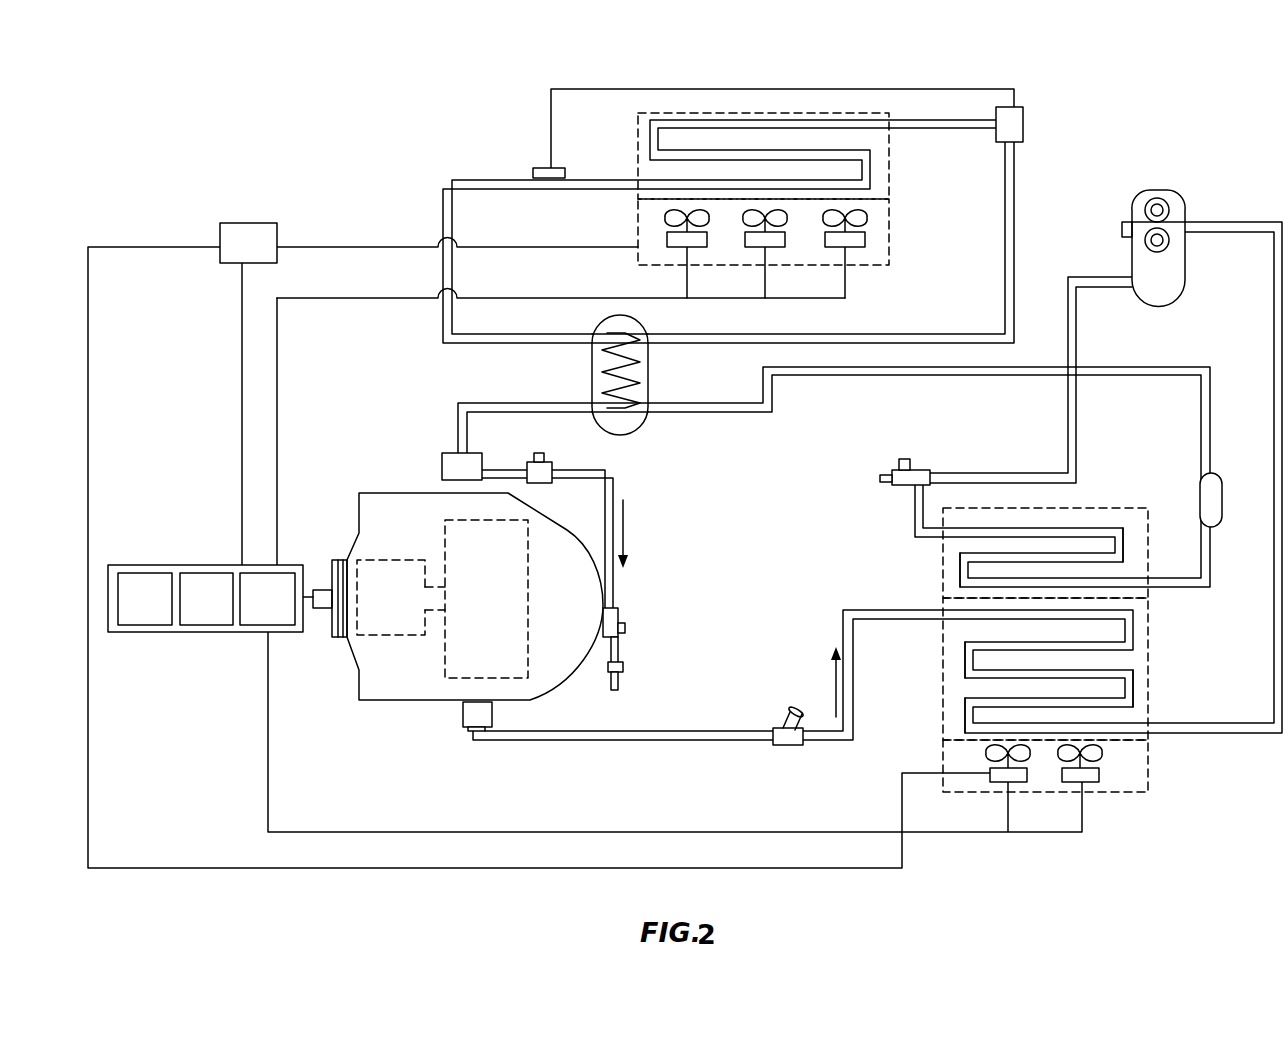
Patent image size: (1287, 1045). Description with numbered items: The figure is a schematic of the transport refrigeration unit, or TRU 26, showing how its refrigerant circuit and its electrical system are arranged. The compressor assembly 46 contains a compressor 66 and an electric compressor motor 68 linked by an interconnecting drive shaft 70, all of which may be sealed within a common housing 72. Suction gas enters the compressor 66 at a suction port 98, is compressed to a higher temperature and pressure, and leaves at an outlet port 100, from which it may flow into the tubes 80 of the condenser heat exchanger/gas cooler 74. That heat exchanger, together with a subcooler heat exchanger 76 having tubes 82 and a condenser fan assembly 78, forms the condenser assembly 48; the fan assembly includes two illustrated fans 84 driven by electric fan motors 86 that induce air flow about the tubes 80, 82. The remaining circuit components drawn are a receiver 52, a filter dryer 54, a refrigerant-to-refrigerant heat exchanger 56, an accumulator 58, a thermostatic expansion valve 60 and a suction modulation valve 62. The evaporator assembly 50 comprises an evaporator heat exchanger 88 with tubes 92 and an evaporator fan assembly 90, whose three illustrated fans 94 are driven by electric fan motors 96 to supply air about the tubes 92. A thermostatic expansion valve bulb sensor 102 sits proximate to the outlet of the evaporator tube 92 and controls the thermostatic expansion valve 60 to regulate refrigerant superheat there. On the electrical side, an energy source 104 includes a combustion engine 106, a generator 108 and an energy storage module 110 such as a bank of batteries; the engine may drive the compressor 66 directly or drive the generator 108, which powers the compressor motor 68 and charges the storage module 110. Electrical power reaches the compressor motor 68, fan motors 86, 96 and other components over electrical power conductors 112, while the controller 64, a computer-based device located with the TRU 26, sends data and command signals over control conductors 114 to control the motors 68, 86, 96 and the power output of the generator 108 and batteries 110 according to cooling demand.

The transport refrigeration unit 26 is at (1162, 85).
The compressor assembly 46 is at (414, 739).
The condenser assembly 48 is at (1110, 811).
The evaporator assembly 50 is at (954, 248).
The receiver 52 is at (1185, 265).
The filter dryer 54 is at (1200, 478).
The refrigerant-to-refrigerant heat exchanger 56 is at (650, 365).
The accumulator 58 is at (442, 466).
The thermostatic expansion valve 60 is at (1023, 140).
The suction modulation valve 62 is at (540, 483).
The controller 64 is at (248, 243).
The compressor 66 is at (486, 599).
The electric compressor motor 68 is at (391, 597).
The interconnecting drive shaft 70 is at (438, 613).
The compressor housing 72 is at (353, 675).
The condenser heat exchanger/gas cooler 74 is at (1150, 614).
The subcooler heat exchanger 76 is at (942, 547).
The condenser fan assembly 78 is at (1148, 770).
The tubes of condenser heat exchanger 80 is at (1133, 683).
The tubes of subcooler heat exchanger 82 is at (1087, 528).
The condenser fan 84 is at (986, 752).
The condenser fan motor 86 is at (1099, 775).
The evaporator heat exchanger 88 is at (889, 147).
The evaporator fan assembly 90 is at (873, 267).
The evaporator tube 92 is at (725, 150).
The evaporator fan 94 is at (665, 217).
The evaporator fan motor 96 is at (707, 245).
The suction port 98 is at (618, 622).
The outlet port 100 is at (465, 731).
The thermostatic expansion valve bulb sensor 102 is at (548, 168).
The energy source 104 is at (201, 556).
The combustion engine 106 is at (145, 599).
The generator 108 is at (206, 599).
The energy storage module 110 is at (267, 599).
The electrical power conductors 112 is at (277, 362).
The control conductors 114 is at (330, 247).